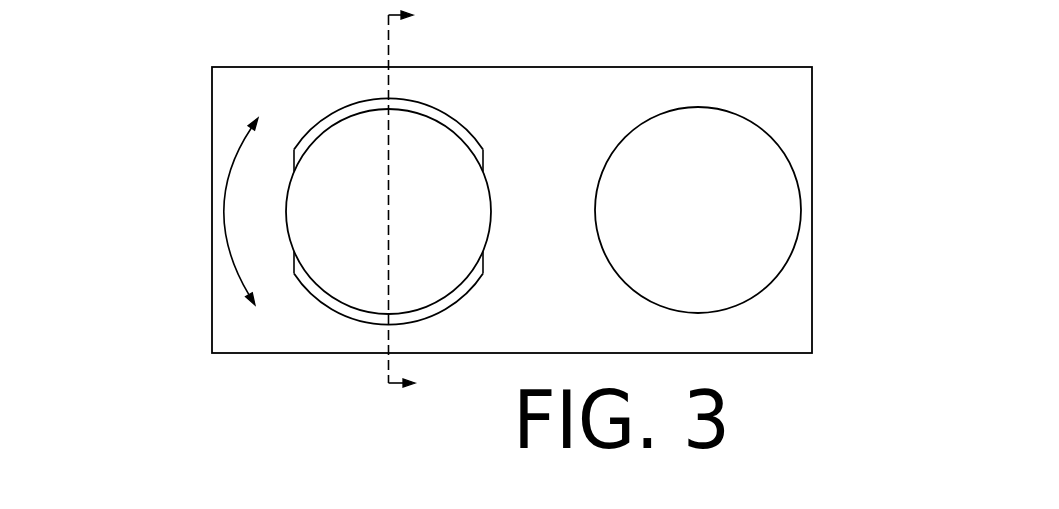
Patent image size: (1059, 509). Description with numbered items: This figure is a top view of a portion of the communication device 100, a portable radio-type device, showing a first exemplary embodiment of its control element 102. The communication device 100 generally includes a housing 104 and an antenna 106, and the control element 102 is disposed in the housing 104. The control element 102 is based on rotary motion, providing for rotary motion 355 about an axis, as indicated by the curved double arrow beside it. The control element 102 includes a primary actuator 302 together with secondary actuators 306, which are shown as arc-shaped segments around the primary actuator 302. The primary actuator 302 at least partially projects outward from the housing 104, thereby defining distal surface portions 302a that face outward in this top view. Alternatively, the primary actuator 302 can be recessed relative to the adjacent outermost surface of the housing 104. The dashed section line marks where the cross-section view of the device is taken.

The communication device 100 is at (146, 325).
The control element 102 is at (263, 192).
The housing 104 is at (564, 128).
The antenna 106 is at (704, 213).
The primary actuator 302 is at (493, 436).
The distal surface portions 302a is at (465, 215).
The secondary actuators 306 is at (351, 90).
The rotary motion 355 is at (237, 152).